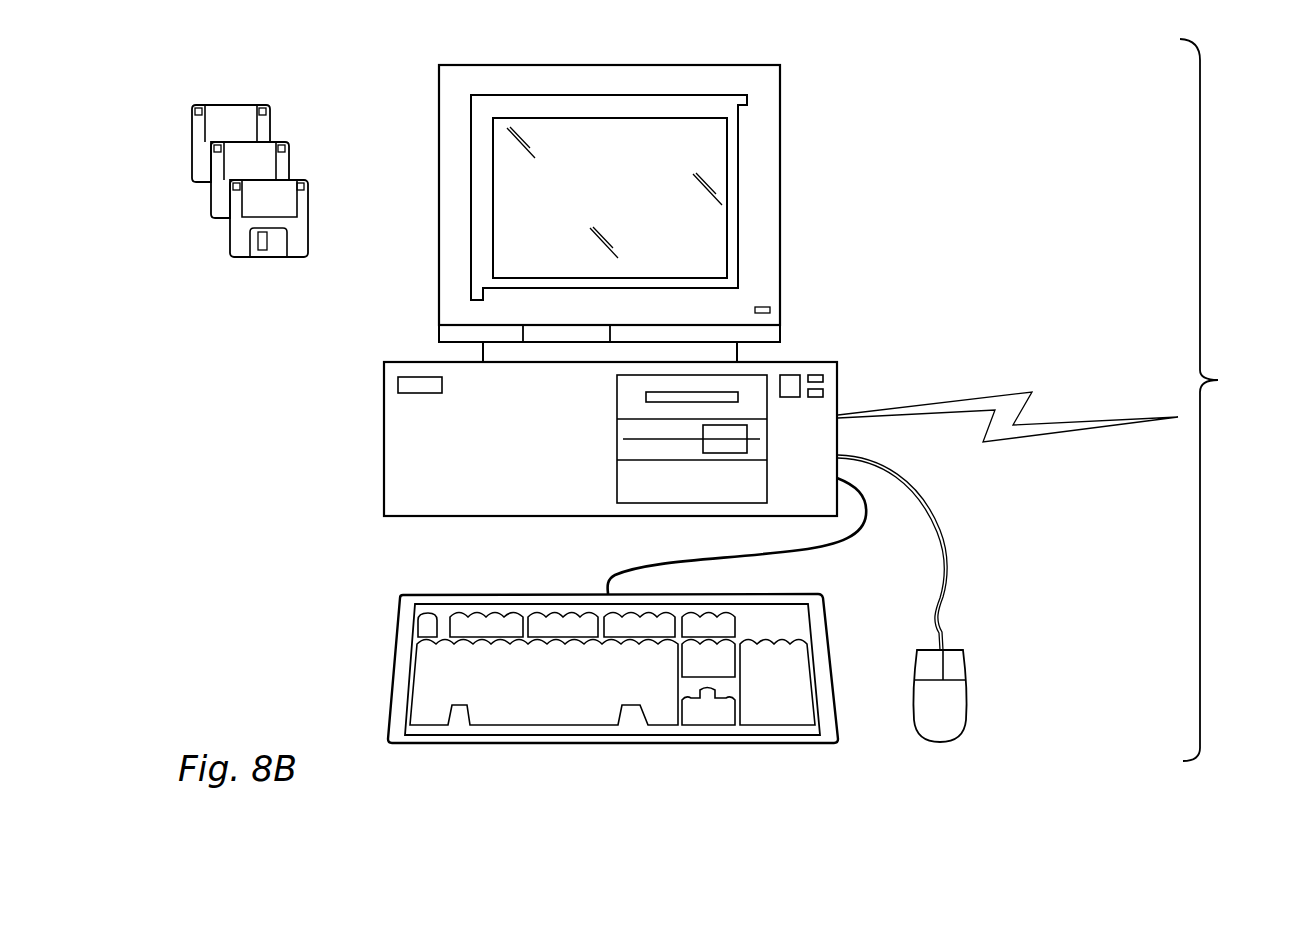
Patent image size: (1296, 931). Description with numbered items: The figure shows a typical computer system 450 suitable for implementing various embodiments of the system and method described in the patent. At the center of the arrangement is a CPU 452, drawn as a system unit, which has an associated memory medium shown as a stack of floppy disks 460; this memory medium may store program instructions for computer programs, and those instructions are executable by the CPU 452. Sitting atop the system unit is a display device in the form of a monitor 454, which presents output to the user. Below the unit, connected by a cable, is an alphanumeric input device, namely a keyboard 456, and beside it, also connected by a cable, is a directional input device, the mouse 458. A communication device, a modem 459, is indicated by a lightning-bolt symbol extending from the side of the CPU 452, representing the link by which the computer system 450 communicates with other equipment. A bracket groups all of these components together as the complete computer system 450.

The computer system 450 is at (1224, 400).
The CPU 452 is at (532, 459).
The monitor 454 is at (631, 206).
The keyboard 456 is at (627, 633).
The mouse 458 is at (903, 621).
The modem 459 is at (1008, 436).
The floppy disks 460 is at (250, 200).